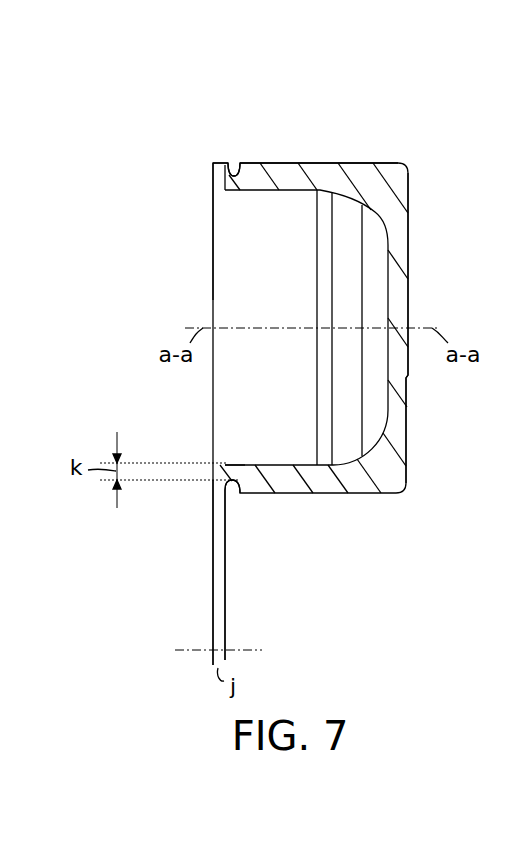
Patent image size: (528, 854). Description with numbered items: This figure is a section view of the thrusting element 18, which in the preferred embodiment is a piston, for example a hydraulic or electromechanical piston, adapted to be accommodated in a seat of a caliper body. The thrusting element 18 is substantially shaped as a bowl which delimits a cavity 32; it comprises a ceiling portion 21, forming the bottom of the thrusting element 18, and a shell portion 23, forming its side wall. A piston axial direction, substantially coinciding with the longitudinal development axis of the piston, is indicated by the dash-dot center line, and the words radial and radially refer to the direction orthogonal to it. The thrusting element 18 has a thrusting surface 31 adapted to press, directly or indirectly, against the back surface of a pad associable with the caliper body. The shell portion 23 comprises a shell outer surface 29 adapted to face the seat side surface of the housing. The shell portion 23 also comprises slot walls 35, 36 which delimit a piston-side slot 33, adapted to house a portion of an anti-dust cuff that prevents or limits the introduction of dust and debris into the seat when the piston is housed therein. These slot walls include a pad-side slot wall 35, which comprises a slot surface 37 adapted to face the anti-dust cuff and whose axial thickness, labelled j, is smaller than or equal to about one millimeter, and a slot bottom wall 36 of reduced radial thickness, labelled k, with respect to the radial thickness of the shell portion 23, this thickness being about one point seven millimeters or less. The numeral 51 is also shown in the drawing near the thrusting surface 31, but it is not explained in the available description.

The sealing assembly 18 is at (303, 115).
The outer side surface 21 is at (412, 292).
The seal body 23 is at (334, 168).
The top surface 29 is at (265, 159).
The flange 31 is at (210, 164).
The cavity 32 is at (286, 275).
The junction 33 is at (238, 508).
The stem 35 is at (213, 489).
The corner fillet 36 is at (224, 189).
The notch 37 is at (221, 164).
The wall top 51 is at (209, 173).